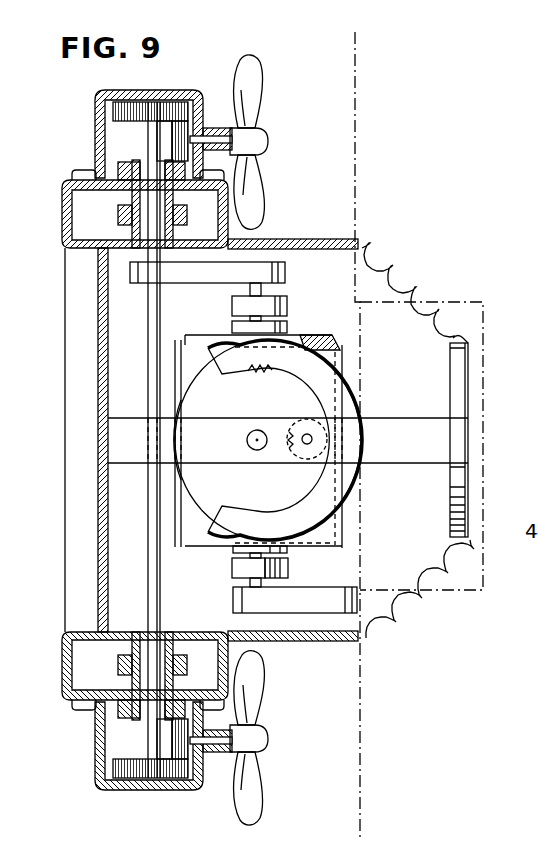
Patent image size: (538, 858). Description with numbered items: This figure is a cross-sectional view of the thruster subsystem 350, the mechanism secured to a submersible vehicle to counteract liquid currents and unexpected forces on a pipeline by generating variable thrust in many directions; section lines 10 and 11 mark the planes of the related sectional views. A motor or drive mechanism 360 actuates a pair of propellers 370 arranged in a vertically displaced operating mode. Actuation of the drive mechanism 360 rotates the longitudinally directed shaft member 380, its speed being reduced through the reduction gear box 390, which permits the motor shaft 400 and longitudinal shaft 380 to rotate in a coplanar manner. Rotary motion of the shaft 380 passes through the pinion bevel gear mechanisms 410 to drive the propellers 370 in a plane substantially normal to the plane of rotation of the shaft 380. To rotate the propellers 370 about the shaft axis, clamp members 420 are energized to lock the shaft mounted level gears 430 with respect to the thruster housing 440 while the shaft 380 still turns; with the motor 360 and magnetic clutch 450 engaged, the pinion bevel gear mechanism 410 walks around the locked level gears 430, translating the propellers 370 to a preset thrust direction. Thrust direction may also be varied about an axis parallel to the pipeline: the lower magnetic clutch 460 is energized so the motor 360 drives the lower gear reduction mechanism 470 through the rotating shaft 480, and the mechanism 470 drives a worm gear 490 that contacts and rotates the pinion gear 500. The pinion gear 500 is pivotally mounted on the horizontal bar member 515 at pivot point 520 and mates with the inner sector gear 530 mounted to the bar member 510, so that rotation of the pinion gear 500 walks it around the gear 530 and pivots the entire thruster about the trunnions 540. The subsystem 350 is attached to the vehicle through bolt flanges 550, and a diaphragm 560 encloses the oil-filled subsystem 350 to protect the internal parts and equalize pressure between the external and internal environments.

The section line 10- 10 is at (305, 42).
The section line 11- 11 is at (40, 586).
The thruster subsystem 350 is at (380, 184).
The motor or drive mechanism 360 is at (200, 350).
The propeller 370 is at (259, 90).
The longitudinal shaft member 380 is at (148, 361).
The reduction gear box 390 is at (279, 278).
The motor shaft 400 is at (265, 323).
The pinion bevel gear mechanism 410 is at (161, 105).
The clamp member 420 is at (121, 204).
The shaft mounted level gear 430 is at (125, 165).
The thruster housing 440 is at (64, 332).
The magnetic clutch 450 is at (287, 303).
The lower magnetic clutch 460 is at (287, 562).
The lower gear reduction mechanism 470 is at (353, 590).
The rotating shaft 480 is at (247, 555).
The worm gear 490 is at (341, 550).
The pinion gear 500 is at (285, 440).
The bar member 510 is at (457, 442).
The horizontal bar member 515 is at (107, 452).
The pivot point 520 is at (310, 436).
The inner sector gear 530 is at (350, 480).
The trunnion 540 is at (250, 438).
The bolt flange 550 is at (456, 385).
The diaphragm 560 is at (421, 440).